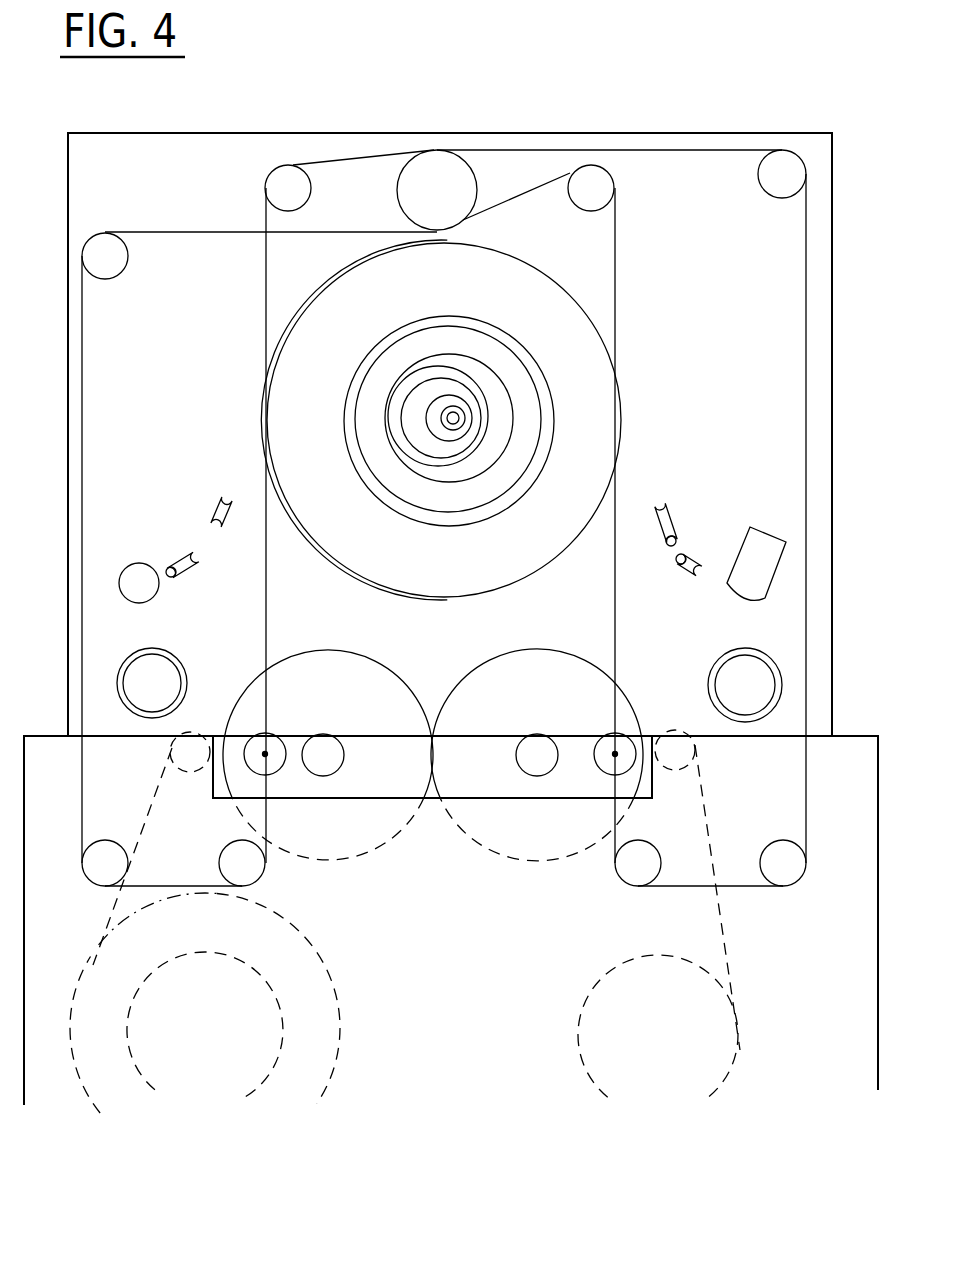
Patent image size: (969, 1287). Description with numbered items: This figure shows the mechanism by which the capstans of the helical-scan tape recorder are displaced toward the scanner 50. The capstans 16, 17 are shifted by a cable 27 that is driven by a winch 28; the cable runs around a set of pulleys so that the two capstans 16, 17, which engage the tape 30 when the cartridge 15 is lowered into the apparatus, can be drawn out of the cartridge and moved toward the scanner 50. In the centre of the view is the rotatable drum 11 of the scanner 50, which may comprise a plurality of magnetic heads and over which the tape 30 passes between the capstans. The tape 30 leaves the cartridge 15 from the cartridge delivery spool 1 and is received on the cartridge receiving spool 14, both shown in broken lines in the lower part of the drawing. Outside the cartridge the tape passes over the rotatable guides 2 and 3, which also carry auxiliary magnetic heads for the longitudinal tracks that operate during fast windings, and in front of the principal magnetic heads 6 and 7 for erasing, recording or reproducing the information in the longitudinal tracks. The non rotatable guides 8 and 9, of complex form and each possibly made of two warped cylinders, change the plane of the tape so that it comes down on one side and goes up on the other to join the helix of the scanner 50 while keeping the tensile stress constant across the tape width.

The cartridge delivery spool 1 is at (327, 968).
The rotatable guide 2 is at (138, 675).
The rotatable guide 3 is at (728, 677).
The principal magnetic head 6 is at (138, 576).
The principal magnetic head 7 is at (763, 545).
The non rotatable guide 8 is at (196, 529).
The non rotatable guide 9 is at (690, 539).
The rotatable drum 11 is at (498, 270).
The cartridge receiving spool 14 is at (594, 985).
The cartridge 15 is at (848, 745).
The capstan 16 is at (332, 758).
The capstan 17 is at (543, 760).
The cable 27 is at (614, 265).
The winch 28 is at (445, 168).
The tape 30 is at (103, 928).
The scanner 50 is at (366, 584).